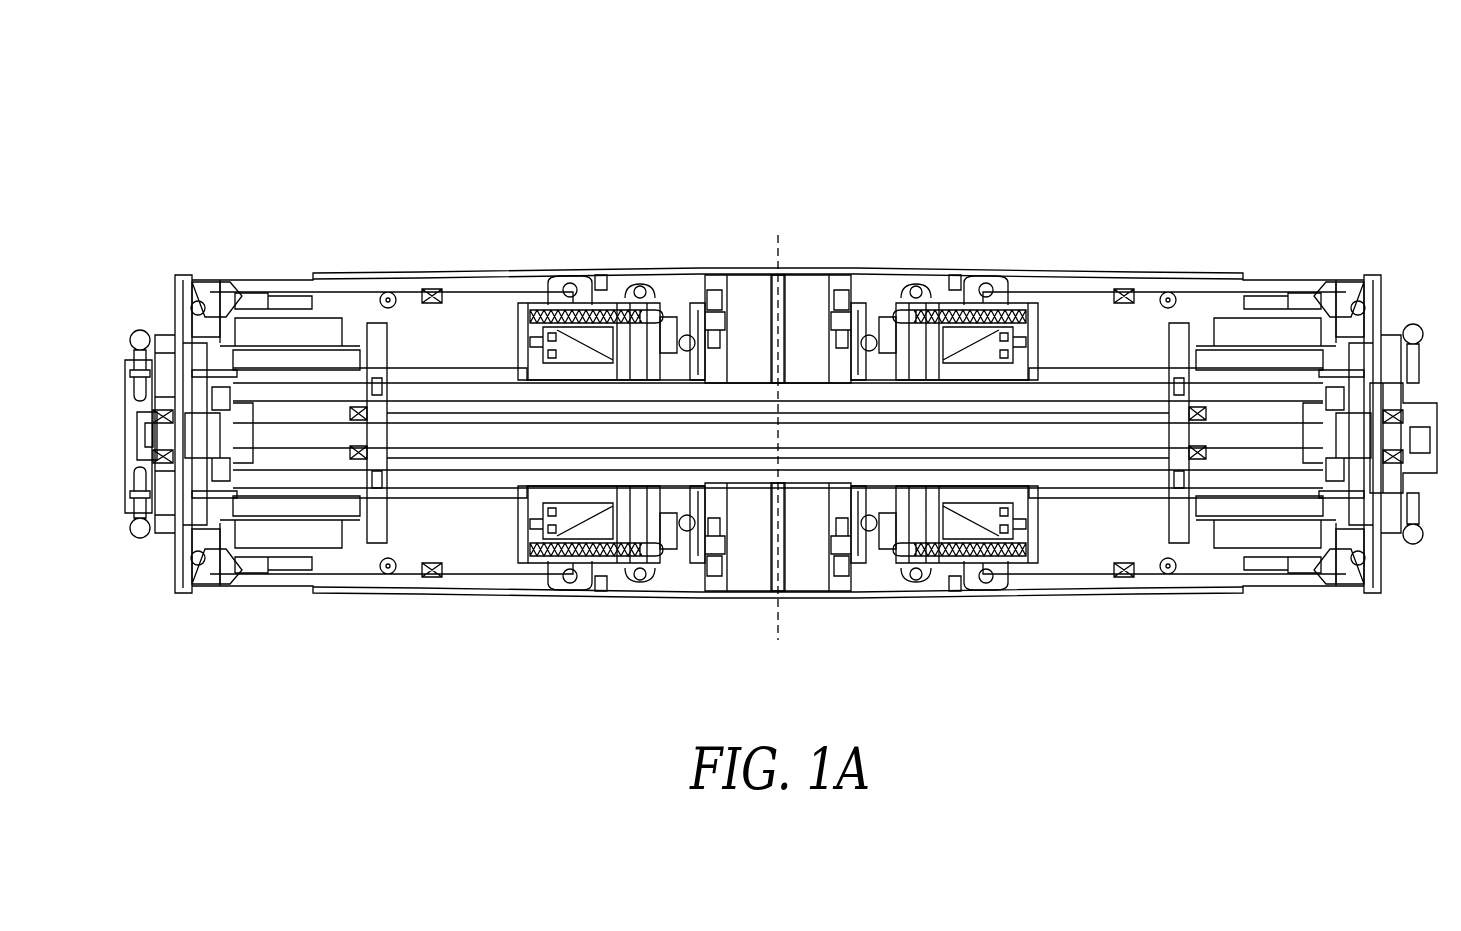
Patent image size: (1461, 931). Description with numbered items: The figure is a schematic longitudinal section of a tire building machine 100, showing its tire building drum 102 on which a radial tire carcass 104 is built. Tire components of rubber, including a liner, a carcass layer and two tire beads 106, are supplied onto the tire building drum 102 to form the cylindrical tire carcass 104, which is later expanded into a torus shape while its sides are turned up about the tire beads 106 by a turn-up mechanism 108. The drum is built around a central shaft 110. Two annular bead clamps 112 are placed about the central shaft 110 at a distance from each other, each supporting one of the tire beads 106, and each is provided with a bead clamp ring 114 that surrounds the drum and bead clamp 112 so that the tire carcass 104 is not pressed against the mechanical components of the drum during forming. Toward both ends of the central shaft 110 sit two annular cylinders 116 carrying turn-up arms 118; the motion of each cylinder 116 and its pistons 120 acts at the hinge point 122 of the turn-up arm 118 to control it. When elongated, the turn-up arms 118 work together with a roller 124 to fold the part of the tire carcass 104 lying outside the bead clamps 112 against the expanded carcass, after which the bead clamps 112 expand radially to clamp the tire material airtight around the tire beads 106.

The tire building machine 100 is at (249, 150).
The tire building drum 102 is at (748, 248).
The tire carcass 104 is at (827, 268).
The tire bead 106 is at (956, 250).
The turn-up mechanism 108 is at (161, 306).
The central shaft 110 is at (758, 435).
The bead clamp 112 is at (632, 294).
The bead clamp ring 114 is at (600, 277).
The annular cylinder 116 is at (247, 368).
The turn-up arm 118 is at (396, 290).
The piston 120 is at (350, 337).
The hinge point 122 is at (198, 300).
The roller 124 is at (566, 280).